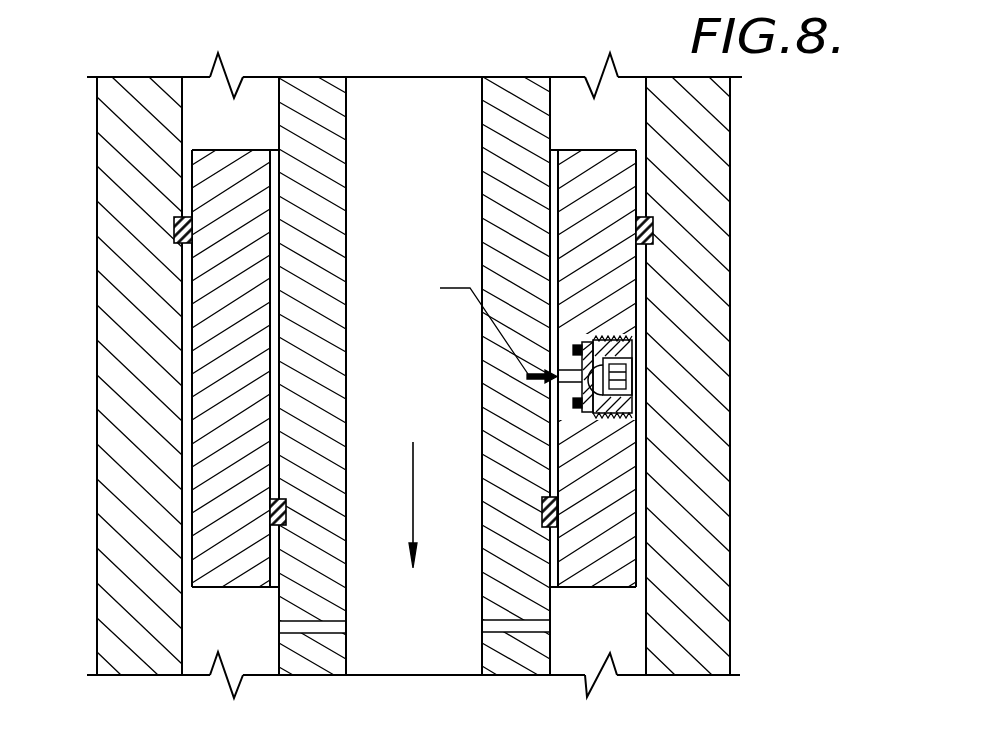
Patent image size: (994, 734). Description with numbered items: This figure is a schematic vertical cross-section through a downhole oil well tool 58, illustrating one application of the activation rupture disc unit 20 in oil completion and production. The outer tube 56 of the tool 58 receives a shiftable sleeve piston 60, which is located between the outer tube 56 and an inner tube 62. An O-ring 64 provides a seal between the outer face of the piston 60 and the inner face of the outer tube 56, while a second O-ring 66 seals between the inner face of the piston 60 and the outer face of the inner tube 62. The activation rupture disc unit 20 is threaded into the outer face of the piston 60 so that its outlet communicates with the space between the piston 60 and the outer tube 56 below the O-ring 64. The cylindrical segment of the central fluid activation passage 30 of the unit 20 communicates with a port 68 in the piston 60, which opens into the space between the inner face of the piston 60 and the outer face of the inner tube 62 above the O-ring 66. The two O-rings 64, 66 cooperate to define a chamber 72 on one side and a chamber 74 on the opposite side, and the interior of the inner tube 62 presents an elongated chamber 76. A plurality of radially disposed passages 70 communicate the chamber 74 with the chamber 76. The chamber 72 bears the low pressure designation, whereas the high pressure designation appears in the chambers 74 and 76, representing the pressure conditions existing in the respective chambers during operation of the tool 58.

The activation rupture disc unit 20 is at (636, 350).
The central fluid activation passage 30 is at (628, 390).
The outer tube 56 is at (712, 130).
The downhole oil well tool 58 is at (520, 75).
The sleeve piston 60 is at (620, 487).
The inner tube 62 is at (497, 188).
The O-ring 64 is at (655, 220).
The O-ring 66 is at (543, 500).
The port 68 is at (578, 394).
The radially disposed passages 70 is at (338, 628).
The chamber 72 is at (627, 93).
The chamber 74 is at (625, 600).
The elongated chamber 76 is at (385, 92).